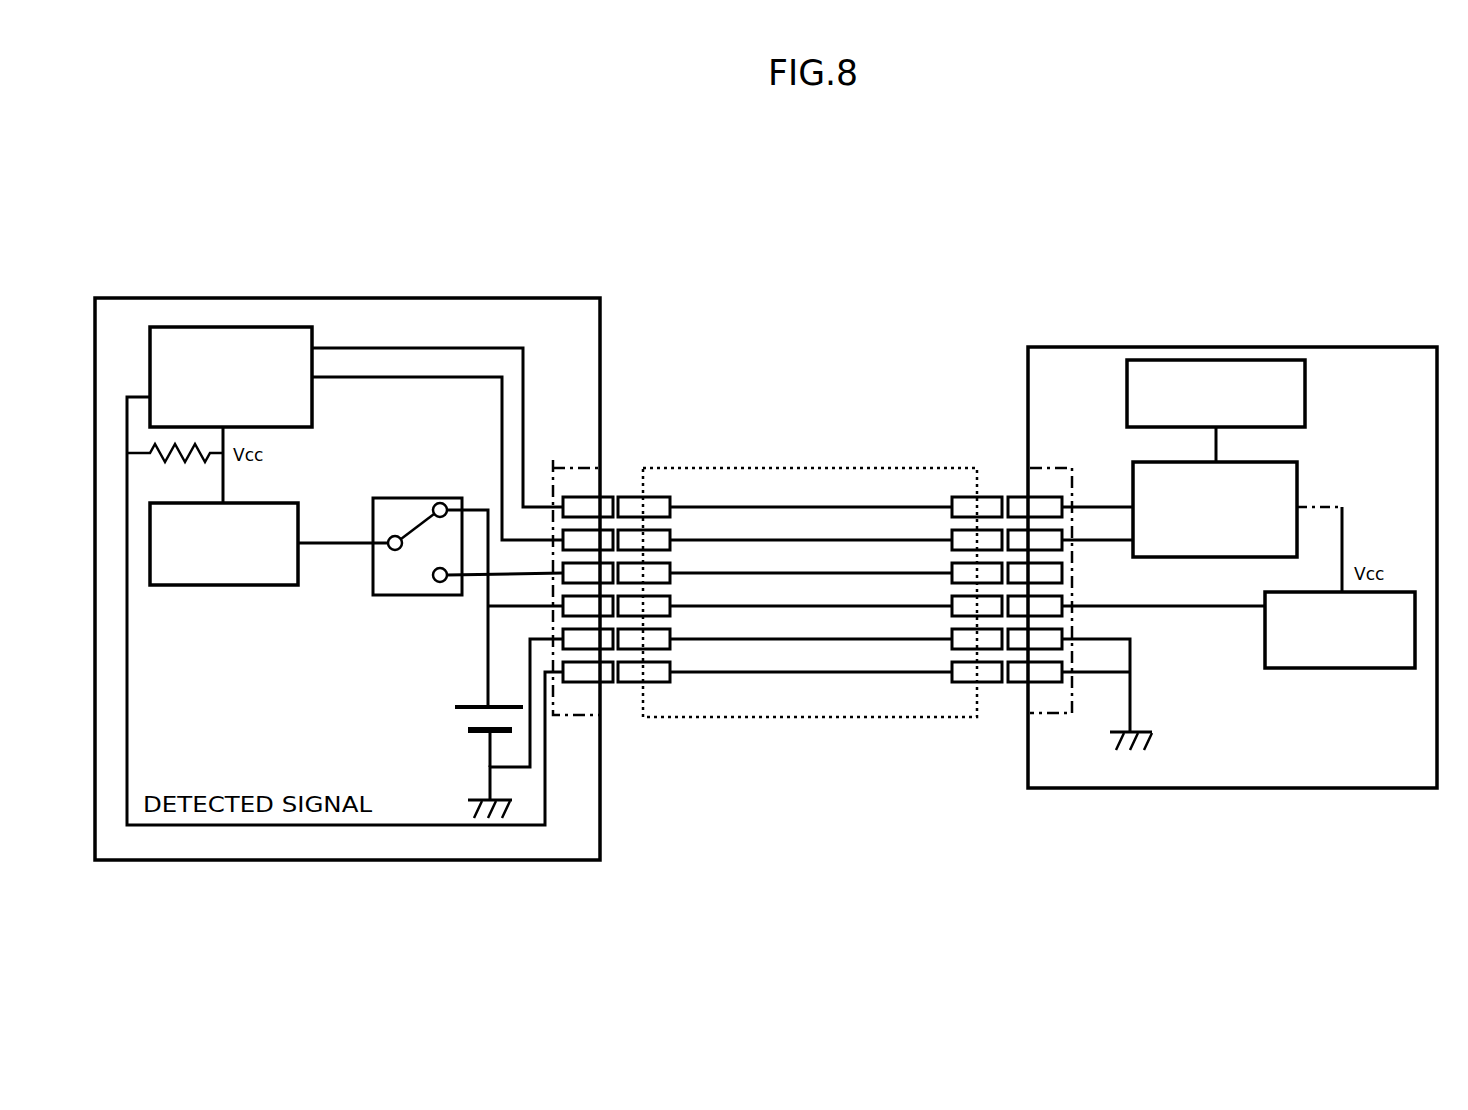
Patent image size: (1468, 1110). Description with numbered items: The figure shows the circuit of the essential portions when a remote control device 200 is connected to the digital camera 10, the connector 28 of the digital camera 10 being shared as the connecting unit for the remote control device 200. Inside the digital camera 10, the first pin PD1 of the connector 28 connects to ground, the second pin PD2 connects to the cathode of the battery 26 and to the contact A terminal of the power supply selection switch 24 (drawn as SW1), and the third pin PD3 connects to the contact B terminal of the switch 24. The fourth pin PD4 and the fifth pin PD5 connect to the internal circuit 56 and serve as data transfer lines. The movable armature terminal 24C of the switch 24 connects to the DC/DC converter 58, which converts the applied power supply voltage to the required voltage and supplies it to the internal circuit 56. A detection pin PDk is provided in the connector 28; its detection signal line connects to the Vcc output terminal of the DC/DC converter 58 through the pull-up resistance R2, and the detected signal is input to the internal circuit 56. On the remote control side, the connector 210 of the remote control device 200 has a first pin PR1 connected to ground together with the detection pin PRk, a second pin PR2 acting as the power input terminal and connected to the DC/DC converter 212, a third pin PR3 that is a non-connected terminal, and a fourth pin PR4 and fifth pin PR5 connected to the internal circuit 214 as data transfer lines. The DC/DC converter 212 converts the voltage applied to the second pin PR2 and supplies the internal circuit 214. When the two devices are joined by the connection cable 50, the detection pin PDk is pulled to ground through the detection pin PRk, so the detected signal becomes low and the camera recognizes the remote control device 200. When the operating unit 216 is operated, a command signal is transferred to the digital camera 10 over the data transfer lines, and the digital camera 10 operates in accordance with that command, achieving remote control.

The digital camera 10 is at (372, 292).
The internal circuit 56 is at (197, 326).
The DC/DC converter 58 is at (190, 587).
The pull-up resistance R2 is at (175, 465).
The power supply selection switch 24 is at (383, 551).
The movable armature terminal 24C is at (388, 541).
The switch SW1 is at (385, 620).
The battery 26 is at (455, 722).
The connector 28 is at (563, 462).
The connection cable 50 is at (758, 467).
The remote control device 200 is at (1173, 345).
The connector 210 is at (1052, 462).
The operating unit 216 is at (1307, 398).
The internal circuit 214 is at (1297, 490).
The DC/DC converter 212 is at (1408, 669).
The fifth pin PD5 is at (575, 503).
The fourth pin PD4 is at (587, 538).
The third pin PD3 is at (598, 571).
The second pin PD2 is at (600, 612).
The first pin PD1 is at (590, 646).
The detection pin PDk is at (582, 680).
The fifth pin PR5 is at (1038, 503).
The fourth pin PR4 is at (1022, 538).
The third pin PR3 is at (1018, 571).
The second pin PR2 is at (1020, 612).
The first pin PR1 is at (1028, 646).
The detection pin PRk is at (1036, 680).